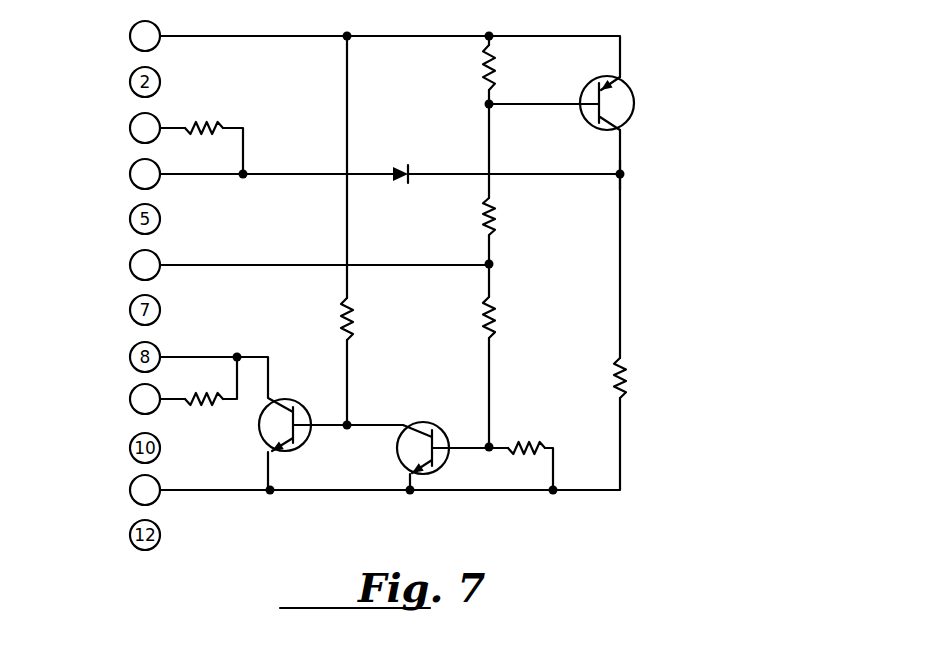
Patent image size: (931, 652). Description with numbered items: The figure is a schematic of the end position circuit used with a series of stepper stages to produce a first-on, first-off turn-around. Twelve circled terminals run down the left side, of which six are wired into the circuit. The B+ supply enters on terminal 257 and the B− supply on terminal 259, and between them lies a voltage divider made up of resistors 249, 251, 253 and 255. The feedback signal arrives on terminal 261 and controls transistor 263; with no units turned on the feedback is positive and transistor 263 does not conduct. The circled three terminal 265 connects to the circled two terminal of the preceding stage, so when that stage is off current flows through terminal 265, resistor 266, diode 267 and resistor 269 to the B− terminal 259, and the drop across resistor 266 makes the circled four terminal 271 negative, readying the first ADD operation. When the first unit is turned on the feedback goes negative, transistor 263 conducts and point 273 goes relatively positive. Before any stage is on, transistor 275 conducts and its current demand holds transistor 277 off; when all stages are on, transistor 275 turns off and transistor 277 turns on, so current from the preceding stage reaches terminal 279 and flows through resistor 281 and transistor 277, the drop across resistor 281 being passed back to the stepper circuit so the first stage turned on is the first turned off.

The terminal 257 is at (131, 38).
The circled 3 terminal 265 is at (131, 124).
The circled 4 terminal 271 is at (131, 173).
The terminal 261 is at (131, 262).
The terminal 279 is at (130, 396).
The terminal 259 is at (131, 490).
The resistor 266 is at (212, 120).
The resistor 281 is at (205, 406).
The resistor 255 is at (530, 442).
The resistor 249 is at (484, 66).
The resistor 251 is at (495, 222).
The resistor 253 is at (496, 320).
The resistor 269 is at (628, 378).
The diode 267 is at (401, 184).
The transistor 263 is at (617, 107).
The transistor 277 is at (285, 406).
The transistor 275 is at (422, 430).
The point 273 is at (628, 173).